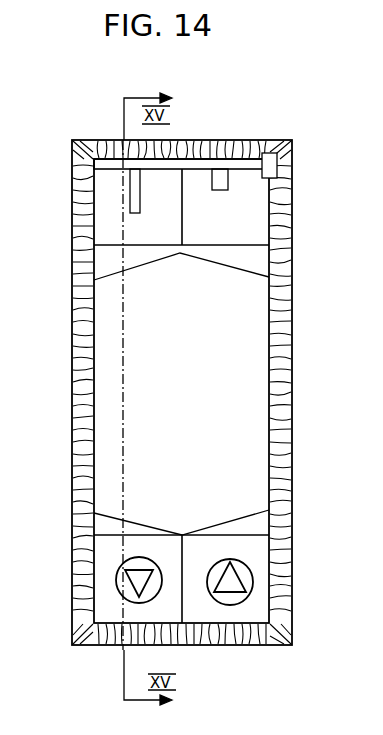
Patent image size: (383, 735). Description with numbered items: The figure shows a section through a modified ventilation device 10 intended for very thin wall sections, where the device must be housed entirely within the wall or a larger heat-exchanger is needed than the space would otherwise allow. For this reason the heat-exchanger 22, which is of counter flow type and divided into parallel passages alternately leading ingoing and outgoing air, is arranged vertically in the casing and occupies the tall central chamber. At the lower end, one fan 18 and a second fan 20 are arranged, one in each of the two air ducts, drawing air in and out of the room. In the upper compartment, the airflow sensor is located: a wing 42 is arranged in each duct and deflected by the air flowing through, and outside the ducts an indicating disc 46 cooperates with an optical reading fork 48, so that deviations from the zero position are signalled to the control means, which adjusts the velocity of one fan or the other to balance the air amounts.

The ventilation device 10 is at (72, 140).
The fan 18 is at (125, 563).
The fan 20 is at (230, 598).
The heat-exchanger 22 is at (222, 470).
The wing 42 is at (218, 190).
The indicating disc 46 is at (272, 154).
The optical reading fork 48 is at (272, 154).